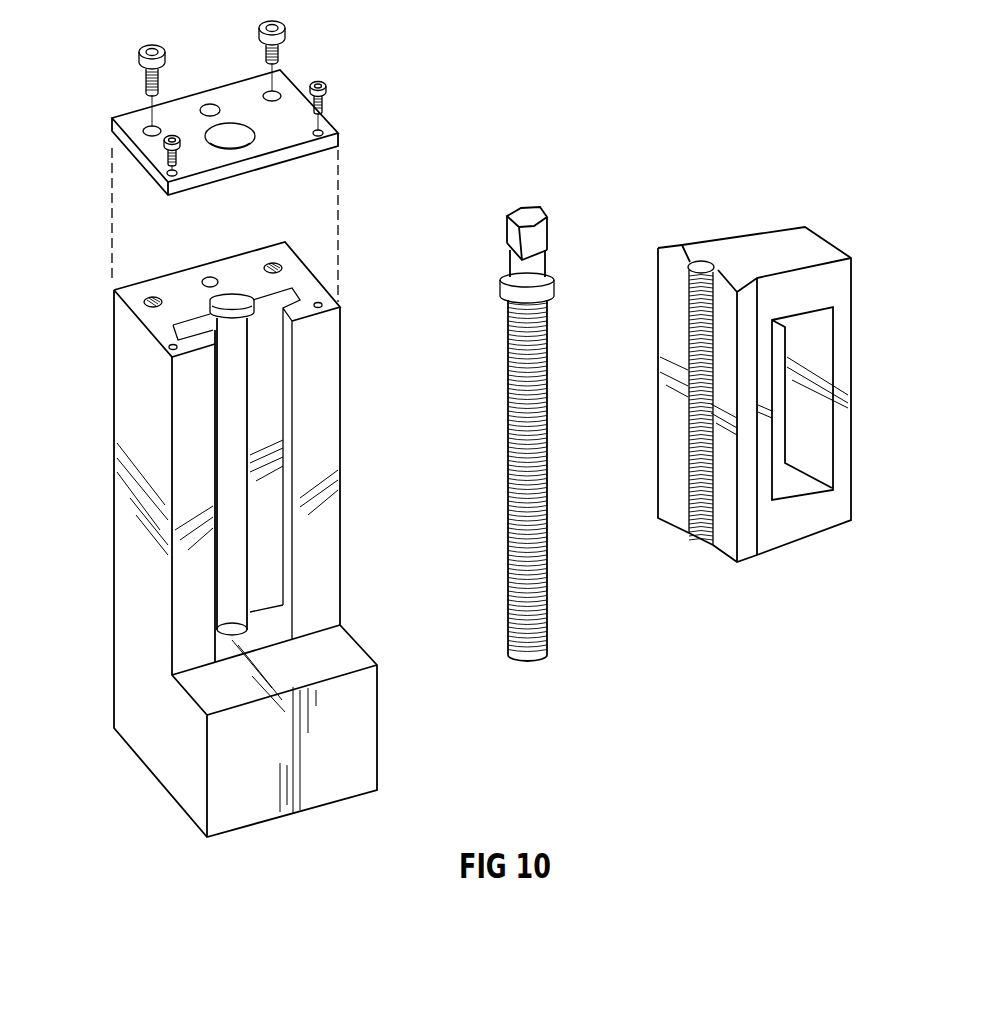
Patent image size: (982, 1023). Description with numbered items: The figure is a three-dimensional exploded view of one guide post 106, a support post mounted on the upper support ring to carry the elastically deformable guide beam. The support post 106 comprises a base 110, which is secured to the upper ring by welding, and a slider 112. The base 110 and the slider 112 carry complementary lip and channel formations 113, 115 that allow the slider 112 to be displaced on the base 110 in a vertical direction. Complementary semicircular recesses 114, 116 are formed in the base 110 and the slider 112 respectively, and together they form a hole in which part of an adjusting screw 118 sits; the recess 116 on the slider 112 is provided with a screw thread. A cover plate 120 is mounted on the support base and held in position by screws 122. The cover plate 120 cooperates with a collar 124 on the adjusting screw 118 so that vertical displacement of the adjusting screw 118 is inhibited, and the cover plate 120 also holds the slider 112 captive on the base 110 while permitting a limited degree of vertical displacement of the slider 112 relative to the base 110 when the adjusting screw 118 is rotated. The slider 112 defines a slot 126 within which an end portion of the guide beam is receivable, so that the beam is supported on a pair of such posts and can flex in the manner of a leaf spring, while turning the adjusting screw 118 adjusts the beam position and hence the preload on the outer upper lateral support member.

The guide post 106 is at (477, 348).
The base 110 is at (147, 585).
The slider 112 is at (744, 373).
The lip and channel formation 113 is at (668, 278).
The semicircular recess 114 is at (232, 282).
The lip and channel formation 115 is at (226, 558).
The semicircular recess 116 is at (711, 253).
The adjusting screw 118 is at (481, 406).
The cover plate 120 is at (287, 115).
The screw 122 is at (260, 28).
The collar 124 is at (500, 287).
The slot 126 is at (794, 488).